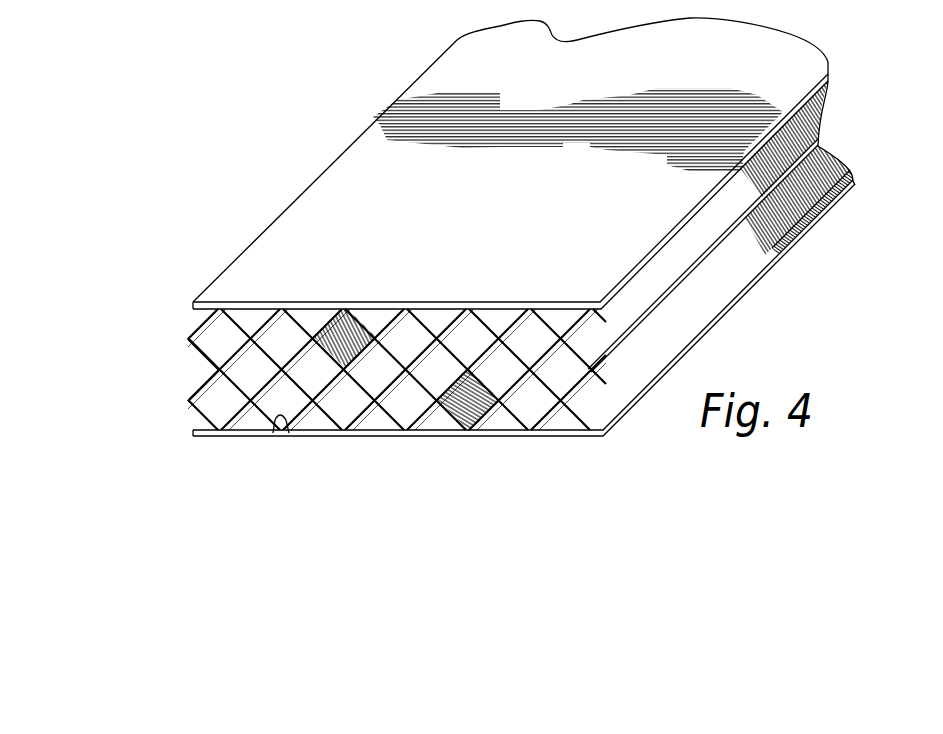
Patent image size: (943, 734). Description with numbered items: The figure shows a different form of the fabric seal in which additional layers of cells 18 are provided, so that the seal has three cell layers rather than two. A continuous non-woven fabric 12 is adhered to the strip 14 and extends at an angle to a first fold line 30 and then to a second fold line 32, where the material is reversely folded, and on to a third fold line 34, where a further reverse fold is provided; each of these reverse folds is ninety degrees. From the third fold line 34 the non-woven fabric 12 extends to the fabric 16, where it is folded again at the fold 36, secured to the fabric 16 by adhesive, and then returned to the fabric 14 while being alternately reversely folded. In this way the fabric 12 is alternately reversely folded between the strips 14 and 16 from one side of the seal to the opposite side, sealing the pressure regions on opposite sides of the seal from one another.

The non-woven fabric 12 is at (220, 369).
The strip 14 is at (353, 173).
The fabric 16 is at (377, 438).
The cells 18 is at (218, 337).
The first fold line 30 is at (188, 336).
The second fold line 32 is at (205, 372).
The third fold line 34 is at (193, 401).
The fold 36 is at (275, 420).